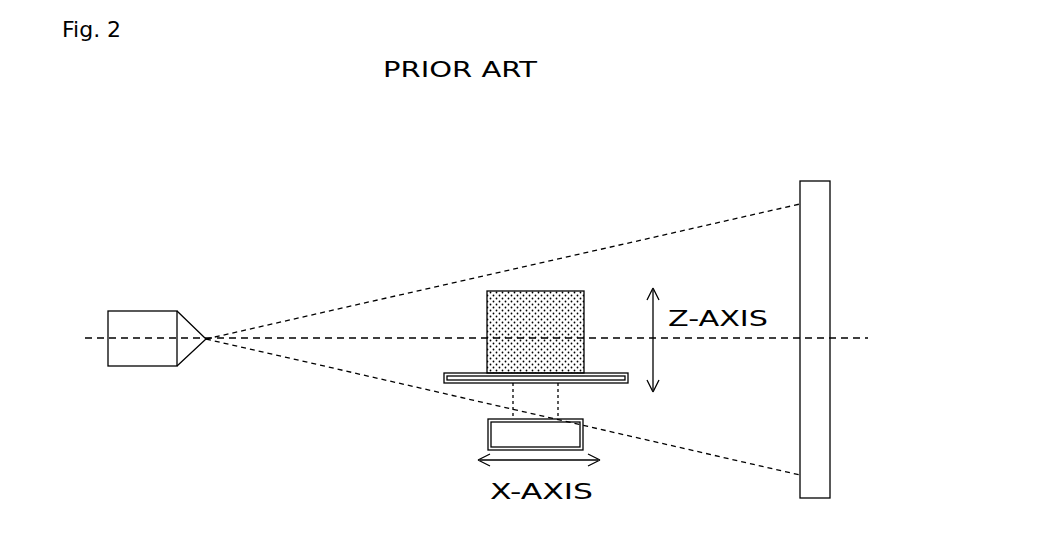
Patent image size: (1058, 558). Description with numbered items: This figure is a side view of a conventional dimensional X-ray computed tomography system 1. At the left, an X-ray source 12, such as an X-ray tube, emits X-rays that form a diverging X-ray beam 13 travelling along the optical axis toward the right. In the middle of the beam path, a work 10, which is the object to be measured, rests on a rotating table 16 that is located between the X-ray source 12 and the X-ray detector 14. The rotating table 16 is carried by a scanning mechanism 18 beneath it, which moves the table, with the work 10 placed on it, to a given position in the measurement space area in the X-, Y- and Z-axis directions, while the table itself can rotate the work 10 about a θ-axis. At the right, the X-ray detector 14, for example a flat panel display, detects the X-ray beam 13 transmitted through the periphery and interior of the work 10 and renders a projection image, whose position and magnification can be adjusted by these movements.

The dimensional X-ray computed tomography system 1 is at (366, 175).
The work 10 is at (540, 322).
The X-ray source 12 is at (136, 311).
The X-ray beam 13 is at (352, 304).
The X-ray detector 14 is at (831, 460).
The rotating table 16 is at (477, 387).
The scanning mechanism 18 is at (585, 436).